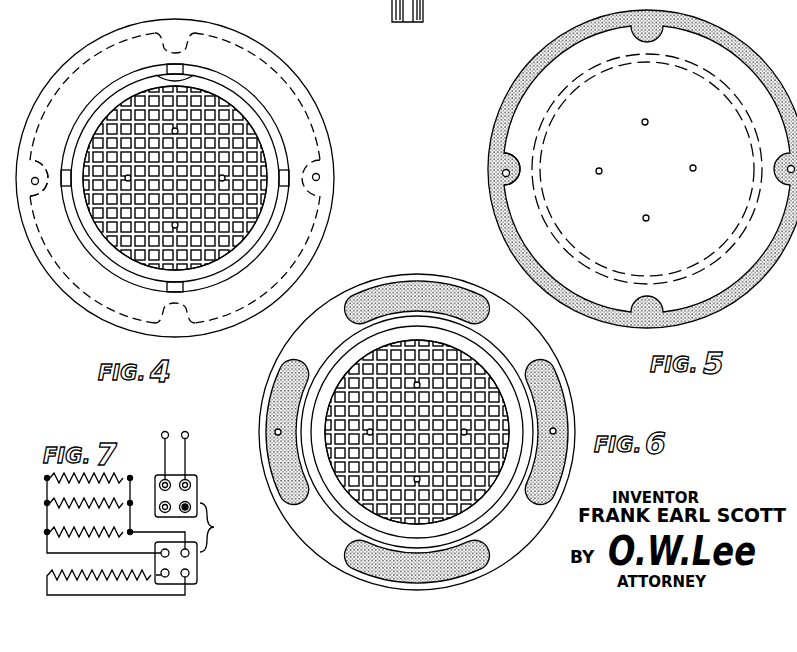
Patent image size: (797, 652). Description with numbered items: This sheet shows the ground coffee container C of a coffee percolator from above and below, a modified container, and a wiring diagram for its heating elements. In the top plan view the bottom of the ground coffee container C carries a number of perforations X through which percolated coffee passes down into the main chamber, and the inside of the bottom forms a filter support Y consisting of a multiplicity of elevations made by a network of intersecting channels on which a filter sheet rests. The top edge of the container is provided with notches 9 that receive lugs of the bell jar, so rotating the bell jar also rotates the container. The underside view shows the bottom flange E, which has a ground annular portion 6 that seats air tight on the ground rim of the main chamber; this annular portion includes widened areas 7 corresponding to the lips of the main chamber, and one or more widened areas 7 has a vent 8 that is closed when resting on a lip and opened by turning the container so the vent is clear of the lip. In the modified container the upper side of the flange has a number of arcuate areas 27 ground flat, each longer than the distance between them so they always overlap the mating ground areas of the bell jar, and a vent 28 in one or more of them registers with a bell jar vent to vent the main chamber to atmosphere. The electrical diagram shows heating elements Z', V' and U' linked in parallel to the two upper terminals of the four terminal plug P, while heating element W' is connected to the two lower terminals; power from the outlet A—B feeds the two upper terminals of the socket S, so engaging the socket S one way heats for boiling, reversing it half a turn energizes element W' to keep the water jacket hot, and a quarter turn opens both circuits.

In FIG. 4, the ground coffee container C is at (183, 73).
In FIG. 6, the ground coffee container C is at (470, 340).
In FIG. 4, the filter support Y is at (228, 110).
In FIG. 6, the filter support Y is at (457, 508).
In FIG. 4, the perforations X is at (225, 181).
In FIG. 5, the perforations X is at (649, 122).
In FIG. 5, the bottom flange E is at (552, 77).
In FIG. 5, the ground annular portion 6 is at (535, 77).
In FIG. 4, the widened areas 7 is at (47, 200).
In FIG. 5, the widened areas 7 is at (511, 160).
In FIG. 4, the vent 8 is at (36, 178).
In FIG. 5, the vent 8 is at (512, 187).
In FIG. 4, the notches 9 is at (313, 174).
In FIG. 6, the arcuate areas 27 is at (352, 308).
In FIG. 6, the vent 28 is at (274, 432).
In FIG. 7, the heating element Z' Z is at (46, 479).
In FIG. 7, the heating element V' V is at (46, 504).
In FIG. 7, the heating element U' U is at (46, 533).
In FIG. 7, the heating element W' W is at (47, 576).
In FIG. 7, the socket S is at (197, 490).
In FIG. 7, the plug P is at (197, 563).
In FIG. 7, the outlet terminal A is at (164, 447).
In FIG. 7, the outlet terminal B is at (185, 447).